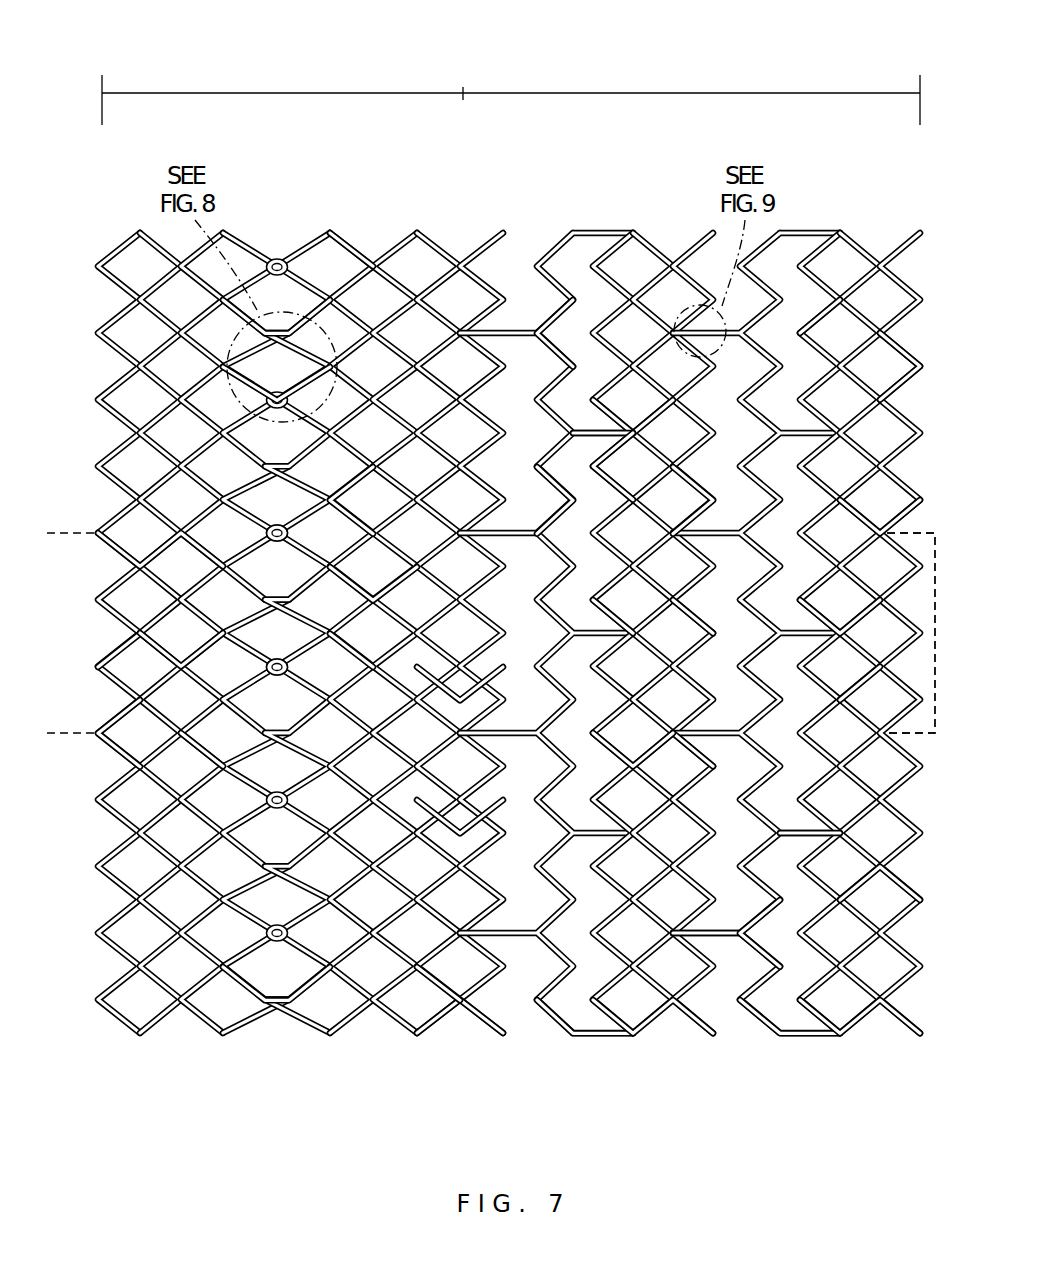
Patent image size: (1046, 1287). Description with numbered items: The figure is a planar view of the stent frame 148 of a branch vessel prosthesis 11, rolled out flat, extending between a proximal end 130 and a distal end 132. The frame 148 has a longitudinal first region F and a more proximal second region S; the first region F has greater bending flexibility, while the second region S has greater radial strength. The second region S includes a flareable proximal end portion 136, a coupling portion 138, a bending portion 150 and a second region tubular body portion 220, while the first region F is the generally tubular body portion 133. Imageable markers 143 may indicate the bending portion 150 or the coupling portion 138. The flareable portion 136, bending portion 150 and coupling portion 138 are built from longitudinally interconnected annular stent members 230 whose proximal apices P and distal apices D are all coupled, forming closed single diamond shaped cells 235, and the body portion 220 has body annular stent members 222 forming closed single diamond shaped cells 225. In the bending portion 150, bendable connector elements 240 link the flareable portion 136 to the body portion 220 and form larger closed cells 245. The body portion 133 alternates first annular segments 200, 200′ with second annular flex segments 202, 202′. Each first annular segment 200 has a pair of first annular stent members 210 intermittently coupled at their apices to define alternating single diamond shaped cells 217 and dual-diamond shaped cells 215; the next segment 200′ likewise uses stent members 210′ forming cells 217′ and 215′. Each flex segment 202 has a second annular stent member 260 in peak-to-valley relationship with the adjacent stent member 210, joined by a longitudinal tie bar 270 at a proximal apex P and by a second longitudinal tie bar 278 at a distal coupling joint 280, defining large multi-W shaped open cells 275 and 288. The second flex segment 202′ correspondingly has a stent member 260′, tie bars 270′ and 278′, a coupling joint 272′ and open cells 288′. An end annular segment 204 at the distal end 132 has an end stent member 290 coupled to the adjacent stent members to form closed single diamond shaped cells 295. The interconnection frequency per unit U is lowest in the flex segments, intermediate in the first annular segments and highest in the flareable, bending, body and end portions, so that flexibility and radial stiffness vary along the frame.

The branch vessel prosthesis 11 is at (502, 627).
The proximal end 130 is at (273, 627).
The distal end 132 is at (840, 572).
The generally tubular body portion 133 is at (691, 627).
The flareable proximal end portion 136 is at (105, 1085).
The coupling portion 138 is at (227, 210).
The imageable marker 143 is at (272, 527).
The expandable tubular stent frame 148 is at (356, 250).
The bending portion 150 is at (284, 1026).
The first annular segment 200 is at (420, 210).
The second of the first annular segments 200′ is at (630, 210).
The second annular flex segment 202 is at (625, 210).
The second of the second flex segments 202′ is at (718, 210).
The end annular segment 204 is at (860, 210).
The first annular stent member 210 is at (443, 1022).
The first annular stent member of the second first annular segment 210′ is at (613, 1027).
The dual-diamond shaped cell 215 is at (467, 694).
The dual-diamond shaped cell of the second first annular segment 215′ is at (683, 497).
The single diamond shaped cell 217 is at (469, 832).
The single diamond shaped cell of the second first annular segment 217′ is at (683, 627).
The second region tubular body portion 220 is at (305, 1085).
The body annular stent member 222 is at (367, 507).
The single diamond shaped cell 225 is at (376, 574).
The annular stent member 230 is at (124, 552).
The closed single diamond shaped cell 235 is at (230, 746).
The bendable connector element 240 is at (284, 330).
The closed cell 245 is at (284, 374).
The second annular stent member 260 is at (553, 1024).
The second annular stent member of the second flex segment 260′ is at (764, 1025).
The longitudinal tie bar 270 is at (500, 528).
The longitudinal tie bar of the second flex segment 270′ is at (748, 915).
The coupling joint 272′ is at (687, 910).
The open cell 275 is at (535, 362).
The second longitudinal tie bar 278 is at (588, 436).
The second longitudinal tie bar of the second flex segment 278′ is at (793, 827).
The distal coupling joint 280 is at (626, 420).
The open cell 288 is at (590, 494).
The open cell of the second flex segment 288′ is at (808, 309).
The end stent member 290 is at (880, 880).
The single diamond shaped cell 295 is at (898, 372).
The proximal apex P is at (376, 650).
The distal apex D is at (145, 642).
The unit U is at (935, 718).
The second region S is at (277, 92).
The first region F is at (722, 92).